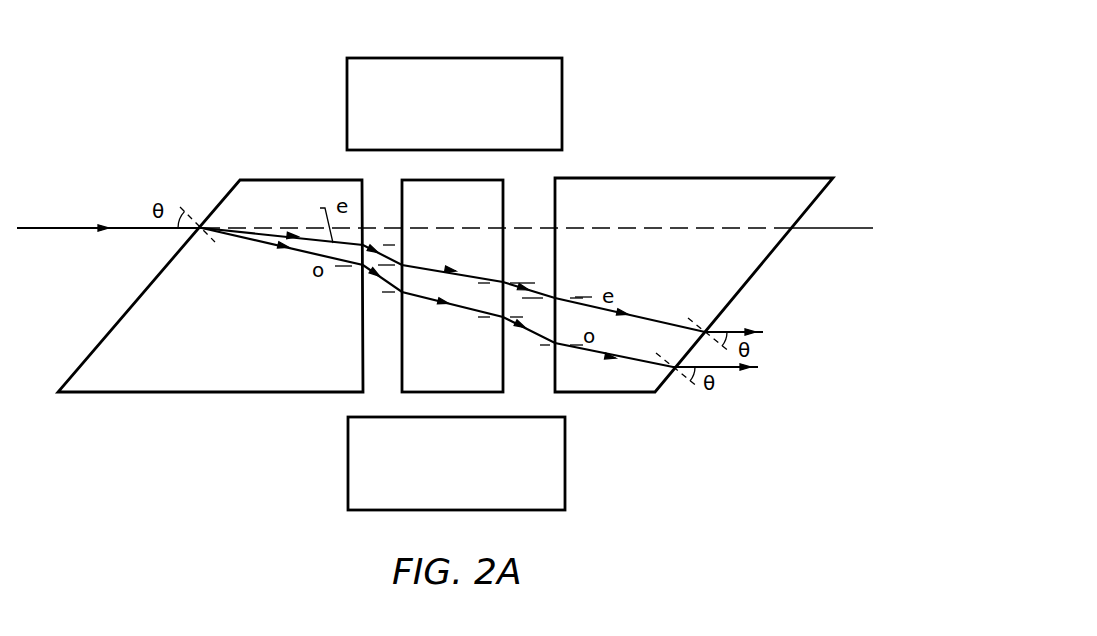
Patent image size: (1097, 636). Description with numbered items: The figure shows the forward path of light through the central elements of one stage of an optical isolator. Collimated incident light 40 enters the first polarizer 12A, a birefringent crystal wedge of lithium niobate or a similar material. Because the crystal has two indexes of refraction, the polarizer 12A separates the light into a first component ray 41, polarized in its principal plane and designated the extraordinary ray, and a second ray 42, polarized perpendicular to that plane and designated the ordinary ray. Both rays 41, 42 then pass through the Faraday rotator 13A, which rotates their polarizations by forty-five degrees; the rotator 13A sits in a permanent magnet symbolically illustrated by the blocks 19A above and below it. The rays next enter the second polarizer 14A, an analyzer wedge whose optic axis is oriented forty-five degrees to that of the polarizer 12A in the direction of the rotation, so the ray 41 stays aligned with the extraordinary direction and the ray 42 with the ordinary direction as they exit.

The first polarizer 12A is at (210, 311).
The Faraday rotator 13A is at (516, 268).
The second polarizer 14A is at (694, 255).
The blocks 19A is at (495, 284).
The incident light 40 is at (109, 210).
The ray 41 is at (482, 263).
The ray 42 is at (480, 305).